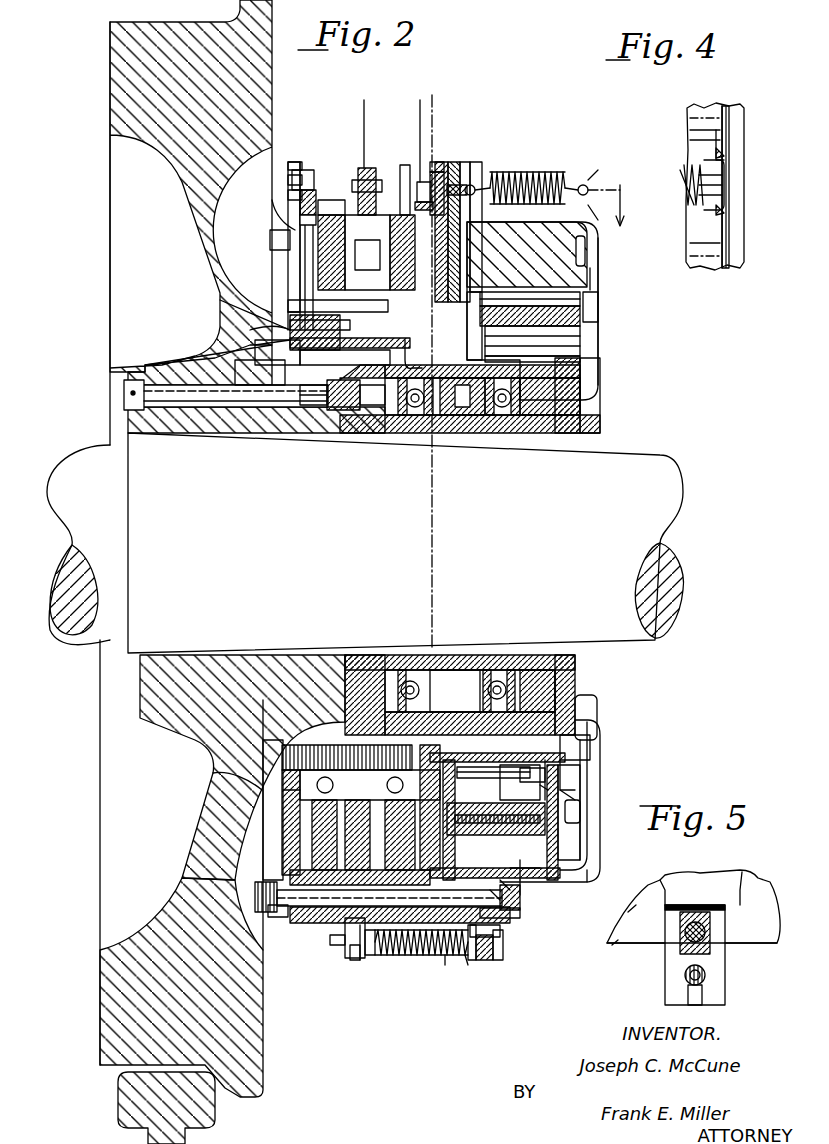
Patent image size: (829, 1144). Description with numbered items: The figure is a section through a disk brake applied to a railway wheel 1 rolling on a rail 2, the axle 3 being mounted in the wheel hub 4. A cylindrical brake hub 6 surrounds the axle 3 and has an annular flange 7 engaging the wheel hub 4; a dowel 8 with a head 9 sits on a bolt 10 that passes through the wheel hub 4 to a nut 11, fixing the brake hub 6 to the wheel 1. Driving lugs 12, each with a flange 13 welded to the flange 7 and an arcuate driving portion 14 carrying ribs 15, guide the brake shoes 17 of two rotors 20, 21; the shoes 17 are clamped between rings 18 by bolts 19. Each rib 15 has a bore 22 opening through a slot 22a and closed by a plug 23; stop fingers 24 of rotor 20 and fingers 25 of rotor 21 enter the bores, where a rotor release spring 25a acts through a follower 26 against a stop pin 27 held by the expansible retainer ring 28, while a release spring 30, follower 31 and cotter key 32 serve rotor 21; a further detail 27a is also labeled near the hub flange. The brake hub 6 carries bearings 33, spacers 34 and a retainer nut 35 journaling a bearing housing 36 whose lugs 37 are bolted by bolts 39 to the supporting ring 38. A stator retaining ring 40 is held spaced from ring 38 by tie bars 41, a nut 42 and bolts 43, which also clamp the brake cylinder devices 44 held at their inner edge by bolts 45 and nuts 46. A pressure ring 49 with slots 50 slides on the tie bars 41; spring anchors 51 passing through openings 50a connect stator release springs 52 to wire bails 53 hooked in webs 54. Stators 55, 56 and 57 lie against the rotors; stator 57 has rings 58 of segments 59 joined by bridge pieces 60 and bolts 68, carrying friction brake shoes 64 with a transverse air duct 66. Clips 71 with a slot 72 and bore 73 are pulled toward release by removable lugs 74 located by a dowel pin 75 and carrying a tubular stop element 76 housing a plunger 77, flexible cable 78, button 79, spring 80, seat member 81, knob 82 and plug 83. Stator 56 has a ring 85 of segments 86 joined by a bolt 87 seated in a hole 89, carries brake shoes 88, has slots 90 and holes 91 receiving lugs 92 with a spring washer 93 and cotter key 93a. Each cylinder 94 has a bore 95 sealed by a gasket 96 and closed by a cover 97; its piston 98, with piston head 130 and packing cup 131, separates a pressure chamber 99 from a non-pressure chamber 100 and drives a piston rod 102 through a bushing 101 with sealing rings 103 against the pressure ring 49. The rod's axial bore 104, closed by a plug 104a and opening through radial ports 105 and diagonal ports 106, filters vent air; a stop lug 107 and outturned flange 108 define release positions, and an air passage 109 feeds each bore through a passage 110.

In FIG. 2, the wheel 1 is at (98, 986).
In FIG. 2, the rail 2 is at (112, 1096).
In FIG. 2, the axle 3 is at (62, 445).
In FIG. 2, the hub 4 is at (145, 676).
In FIG. 2, the cylindrical brake hub 6 is at (500, 433).
In FIG. 2, the annular flange 7 is at (300, 147).
In FIG. 2, the dowel 8 is at (335, 410).
In FIG. 2, the head 9 is at (410, 430).
In FIG. 2, the bolt 10 is at (260, 370).
In FIG. 2, the nut 11 is at (132, 380).
In FIG. 2, the combined rotor guide and driving lug 12 is at (355, 425).
In FIG. 2, the flange 13 is at (380, 432).
In FIG. 2, the arcuate driving portion 14 is at (302, 395).
In FIG. 2, the rib 15 is at (290, 315).
In FIG. 2, the brake shoe 17 is at (452, 1014).
In FIG. 2, the ring 18 is at (288, 262).
In FIG. 2, the bolt 19 is at (283, 790).
In FIG. 2, the brake rotor 20 is at (310, 190).
In FIG. 2, the brake rotor 21 is at (402, 190).
In FIG. 2, the bore 22 is at (290, 360).
In FIG. 2, the slot 22a is at (290, 315).
In FIG. 2, the plug 23 is at (292, 340).
In FIG. 2, the stop finger 24 is at (367, 255).
In FIG. 2, the finger 25 is at (445, 680).
In FIG. 2, the rotor release spring 25a is at (295, 370).
In FIG. 2, the follower 26 is at (318, 410).
In FIG. 2, the stop pin 27 is at (450, 430).
In FIG. 2, the shoulder 27a is at (282, 795).
In FIG. 2, the expansible retainer ring 28 is at (600, 340).
In FIG. 2, the release spring 30 is at (322, 770).
In FIG. 2, the follower 31 is at (400, 680).
In FIG. 2, the cotter key 32 is at (412, 680).
In FIG. 2, the anti-frictional bearing 33 is at (500, 680).
In FIG. 2, the spacer 34 is at (465, 690).
In FIG. 2, the retainer nut 35 is at (538, 670).
In FIG. 2, the bearing housing 36 is at (597, 700).
In FIG. 2, the lug 37 is at (575, 760).
In FIG. 2, the combined stator and brake cylinder supporting ring 38 is at (462, 170).
In FIG. 2, the bolt 39 is at (590, 740).
In FIG. 2, the stator retaining ring 40 is at (270, 915).
In FIG. 2, the tie bar 41 is at (255, 892).
In FIG. 5, the tie bar 41 is at (685, 945).
In FIG. 2, the nut 42 is at (272, 885).
In FIG. 2, the bolt 43 is at (498, 900).
In FIG. 5, the bolt 43 is at (702, 945).
In FIG. 2, the brake cylinder device 44 is at (582, 294).
In FIG. 4, the brake cylinder device 44 is at (729, 140).
In FIG. 2, the bolt 45 is at (582, 314).
In FIG. 2, the nut 46 is at (600, 303).
In FIG. 2, the pressure ring 49 is at (441, 180).
In FIG. 2, the slot 50 is at (478, 905).
In FIG. 2, the opening 50a is at (470, 188).
In FIG. 2, the spring anchor 51 is at (482, 190).
In FIG. 5, the spring anchor 51 is at (618, 960).
In FIG. 2, the stator release spring 52 is at (545, 190).
In FIG. 4, the stator release spring 52 is at (684, 185).
In FIG. 2, the wire bail 53 is at (588, 188).
In FIG. 4, the wire bail 53 is at (726, 196).
In FIG. 2, the web 54 is at (620, 203).
In FIG. 4, the web 54 is at (722, 152).
In FIG. 2, the stator 55 is at (404, 215).
In FIG. 2, the stator 56 is at (290, 210).
In FIG. 2, the stator 57 is at (364, 146).
In FIG. 2, the ring 58 is at (374, 180).
In FIG. 2, the ring segment 59 is at (610, 935).
In FIG. 5, the ring segment 59 is at (612, 935).
In FIG. 2, the bridge piece 60 is at (314, 190).
In FIG. 2, the friction brake shoe 64 is at (322, 225).
In FIG. 5, the friction brake shoe 64 is at (700, 890).
In FIG. 2, the transverse air duct 66 is at (418, 955).
In FIG. 2, the bolt 68 is at (332, 200).
In FIG. 2, the clip 71 is at (345, 930).
In FIG. 5, the clip 71 is at (725, 990).
In FIG. 2, the slot 72 is at (352, 958).
In FIG. 5, the slot 72 is at (695, 985).
In FIG. 5, the bore 73 is at (688, 978).
In FIG. 2, the removable lug 74 is at (490, 958).
In FIG. 2, the dowel pin 75 is at (488, 940).
In FIG. 2, the tubular stop element 76 is at (468, 957).
In FIG. 2, the plunger 77 is at (474, 950).
In FIG. 2, the flexible cable 78 is at (447, 955).
In FIG. 2, the button 79 is at (362, 960).
In FIG. 2, the spring 80 is at (426, 925).
In FIG. 2, the seat member 81 is at (372, 958).
In FIG. 2, the external knob 82 is at (330, 942).
In FIG. 2, the plug 83 is at (498, 950).
In FIG. 2, the ring 85 is at (300, 170).
In FIG. 2, the segment 86 is at (262, 232).
In FIG. 2, the bolt 87 is at (292, 185).
In FIG. 2, the brake shoe 88 is at (288, 240).
In FIG. 2, the hole 89 is at (292, 170).
In FIG. 2, the slot 90 is at (290, 845).
In FIG. 2, the hole 91 is at (440, 165).
In FIG. 2, the lug 92 is at (422, 182).
In FIG. 2, the spring washer 93 is at (428, 202).
In FIG. 2, the cotter key 93a is at (435, 130).
In FIG. 2, the cylinder 94 is at (580, 855).
In FIG. 2, the bore 95 is at (508, 885).
In FIG. 2, the gasket 96 is at (512, 938).
In FIG. 2, the cover 97 is at (590, 250).
In FIG. 2, the piston 98 is at (550, 872).
In FIG. 2, the pressure chamber 99 is at (525, 880).
In FIG. 2, the non-pressure chamber 100 is at (575, 768).
In FIG. 2, the bushing 101 is at (455, 843).
In FIG. 2, the piston rod 102 is at (490, 892).
In FIG. 2, the sealing ring 103 is at (445, 858).
In FIG. 2, the axial bore 104 is at (520, 783).
In FIG. 2, the plug 104a is at (575, 800).
In FIG. 2, the radial port 105 is at (560, 845).
In FIG. 2, the diagonal port 106 is at (497, 816).
In FIG. 2, the stop lug 107 is at (560, 790).
In FIG. 2, the outturned flange 108 is at (582, 332).
In FIG. 2, the air passage 109 is at (592, 290).
In FIG. 2, the passage 110 is at (575, 822).
In FIG. 2, the piston head 130 is at (548, 775).
In FIG. 2, the flexible packing cup 131 is at (585, 780).